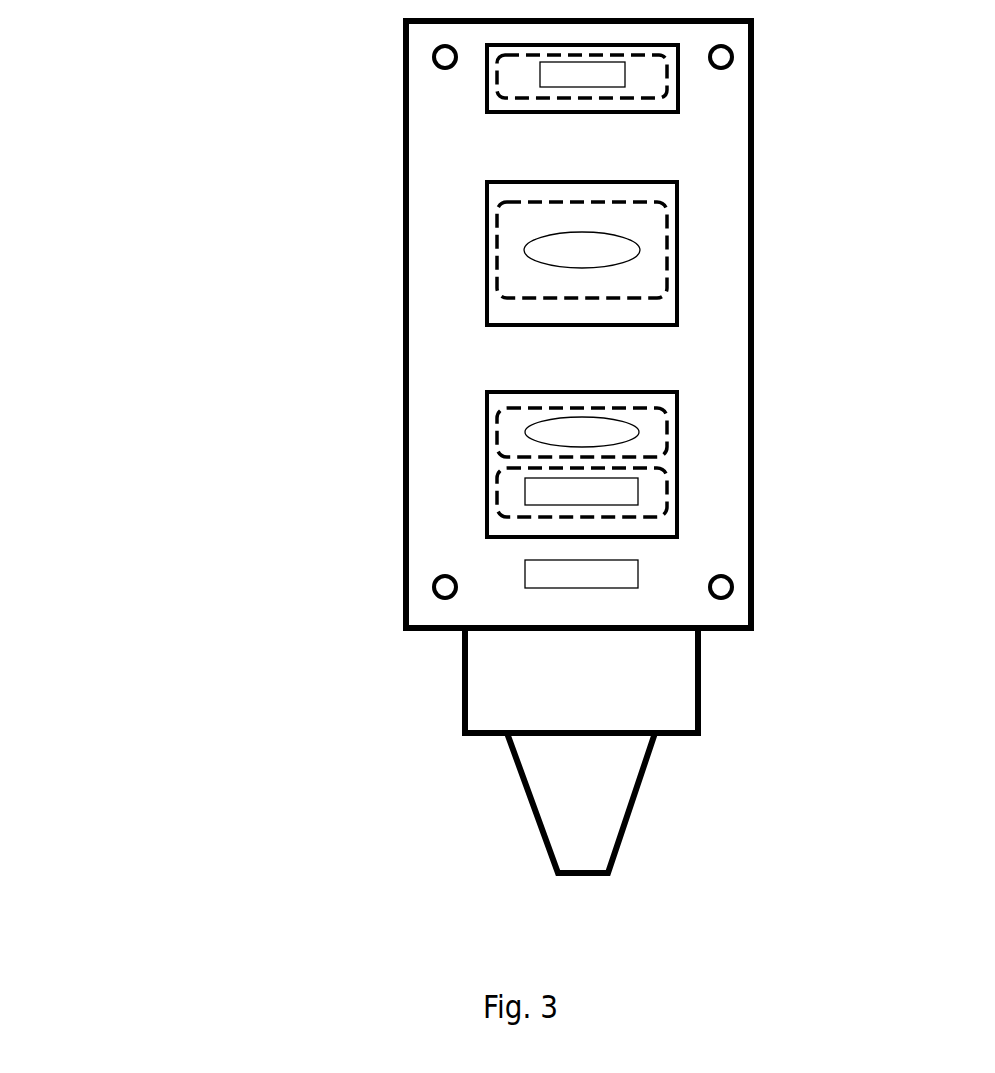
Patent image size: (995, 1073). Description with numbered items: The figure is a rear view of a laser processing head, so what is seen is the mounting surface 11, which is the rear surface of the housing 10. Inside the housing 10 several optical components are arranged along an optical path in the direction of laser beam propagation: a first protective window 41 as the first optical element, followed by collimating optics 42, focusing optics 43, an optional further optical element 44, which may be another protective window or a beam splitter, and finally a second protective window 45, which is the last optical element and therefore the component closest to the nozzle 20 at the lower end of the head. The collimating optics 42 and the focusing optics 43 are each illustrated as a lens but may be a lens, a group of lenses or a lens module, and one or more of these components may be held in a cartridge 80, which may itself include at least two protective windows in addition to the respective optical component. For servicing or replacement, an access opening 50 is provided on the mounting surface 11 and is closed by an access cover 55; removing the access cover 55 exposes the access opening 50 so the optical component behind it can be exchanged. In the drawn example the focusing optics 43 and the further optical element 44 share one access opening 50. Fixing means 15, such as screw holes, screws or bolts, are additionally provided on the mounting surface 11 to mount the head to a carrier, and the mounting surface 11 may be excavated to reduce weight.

The housing 10 is at (755, 98).
The mounting surface 11 is at (728, 185).
The fixing means 15 is at (733, 57).
The nozzle 20 is at (640, 790).
The first protective window 41 is at (540, 73).
The collimating optics 42 is at (557, 248).
The focusing optics 43 is at (560, 437).
The further optical element 44 is at (560, 497).
The second protective window 45 is at (540, 573).
The access opening 50 is at (686, 279).
The access cover 55 is at (677, 312).
The cartridge 80 is at (500, 238).